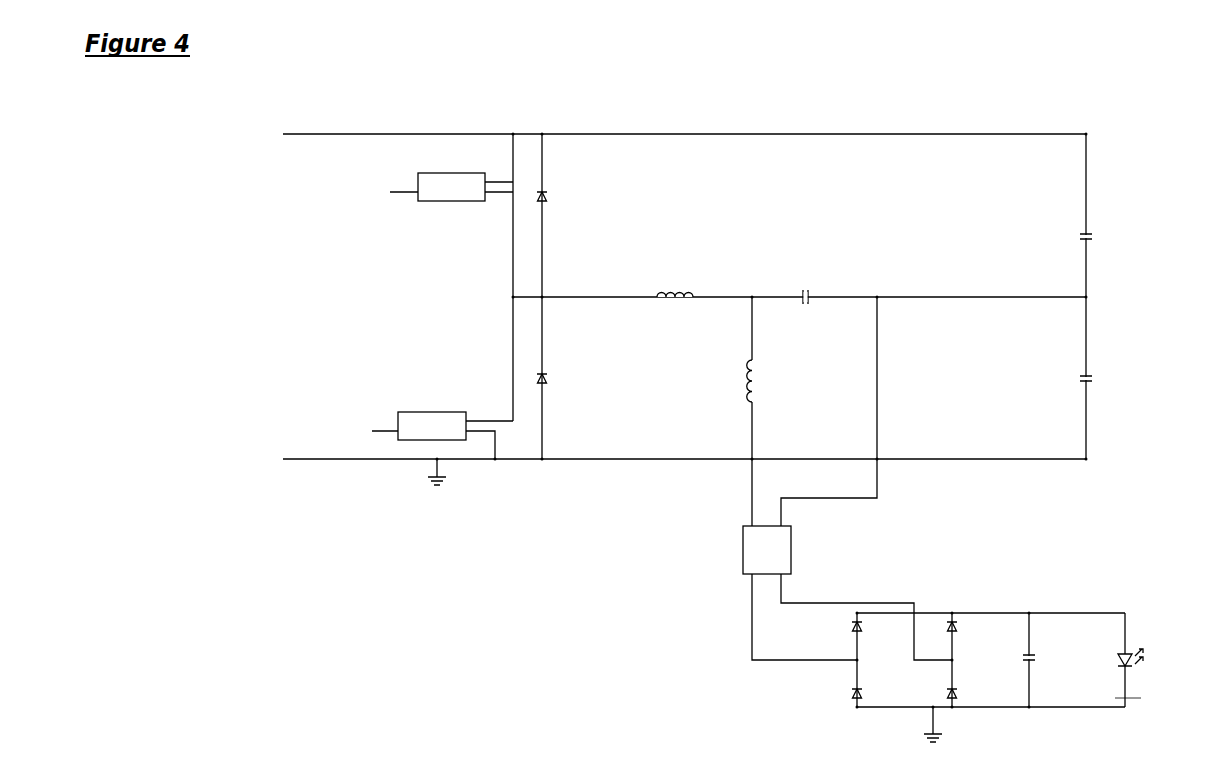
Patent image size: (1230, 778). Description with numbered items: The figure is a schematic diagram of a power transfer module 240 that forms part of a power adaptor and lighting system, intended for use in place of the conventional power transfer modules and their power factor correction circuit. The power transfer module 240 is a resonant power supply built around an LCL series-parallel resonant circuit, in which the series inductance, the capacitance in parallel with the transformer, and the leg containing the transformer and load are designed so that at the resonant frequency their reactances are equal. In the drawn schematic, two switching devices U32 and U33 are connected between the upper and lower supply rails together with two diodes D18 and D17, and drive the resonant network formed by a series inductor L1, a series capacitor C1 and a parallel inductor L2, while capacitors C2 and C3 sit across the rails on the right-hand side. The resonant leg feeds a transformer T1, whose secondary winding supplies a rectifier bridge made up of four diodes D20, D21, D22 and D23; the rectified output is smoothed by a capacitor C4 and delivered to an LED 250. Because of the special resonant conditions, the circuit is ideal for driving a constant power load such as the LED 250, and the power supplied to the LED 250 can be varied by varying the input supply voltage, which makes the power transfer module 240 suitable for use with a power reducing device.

The power transfer module 240 is at (475, 613).
The LED 250 is at (1126, 652).
The MOSFET gate driver U32 is at (451, 188).
The MOSFET gate driver U33 is at (442, 430).
The diode D17 is at (566, 384).
The diode D18 is at (566, 202).
The inductor L1 is at (676, 296).
The inductor L2 is at (765, 382).
The capacitor C1 is at (808, 299).
The capacitor C2 is at (1103, 242).
The capacitor C3 is at (1101, 384).
The capacitor C4 is at (1046, 660).
The transformer T1 is at (818, 550).
The rectifier diode D20 is at (880, 632).
The rectifier diode D21 is at (880, 699).
The rectifier diode D22 is at (976, 699).
The rectifier diode D23 is at (976, 632).